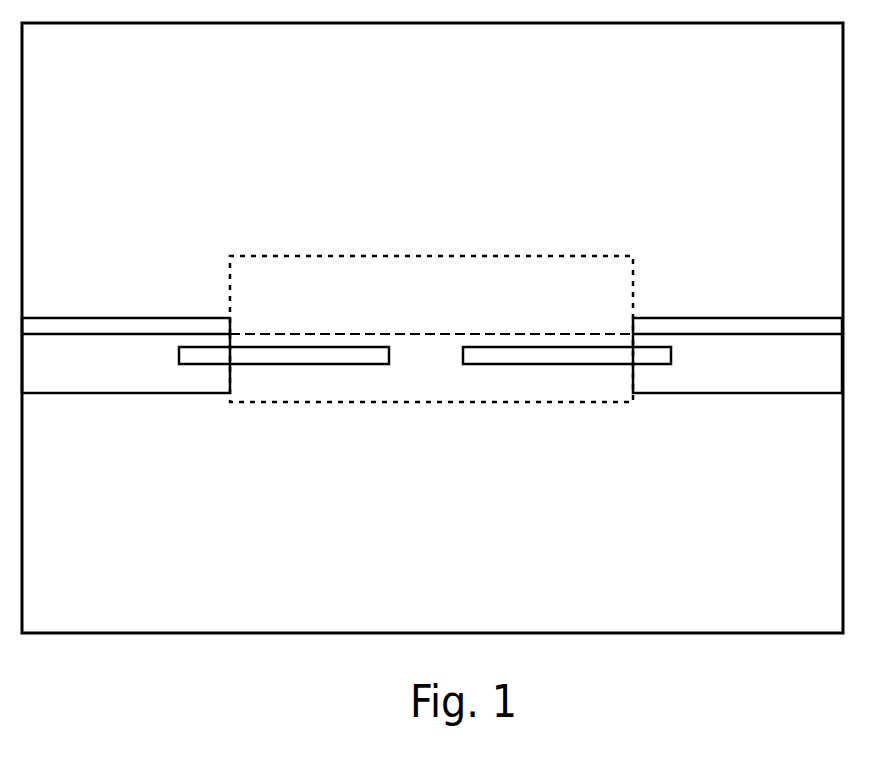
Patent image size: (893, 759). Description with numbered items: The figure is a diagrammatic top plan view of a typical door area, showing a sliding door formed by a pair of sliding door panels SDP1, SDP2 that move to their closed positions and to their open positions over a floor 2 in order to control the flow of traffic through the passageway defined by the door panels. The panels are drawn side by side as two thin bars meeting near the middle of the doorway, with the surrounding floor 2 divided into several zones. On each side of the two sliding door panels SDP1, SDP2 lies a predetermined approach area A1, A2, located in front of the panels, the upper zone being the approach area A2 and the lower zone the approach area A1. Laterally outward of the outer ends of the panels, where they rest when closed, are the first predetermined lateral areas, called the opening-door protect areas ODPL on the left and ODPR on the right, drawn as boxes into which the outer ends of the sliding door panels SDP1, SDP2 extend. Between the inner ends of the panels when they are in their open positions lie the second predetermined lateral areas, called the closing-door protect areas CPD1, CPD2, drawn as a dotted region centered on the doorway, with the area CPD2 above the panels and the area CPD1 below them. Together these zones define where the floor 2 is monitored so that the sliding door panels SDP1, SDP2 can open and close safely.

The floor 2 is at (698, 621).
The predetermined approach area A1 is at (433, 610).
The predetermined approach area A2 is at (429, 55).
The opening-door protect area (left) ODPL is at (126, 355).
The opening-door protect area (right) ODPR is at (737, 355).
The closing-door protect area CPD1 is at (431, 368).
The closing-door protect area CPD2 is at (431, 295).
The sliding door panel SDP1 is at (312, 355).
The sliding door panel SDP2 is at (546, 355).